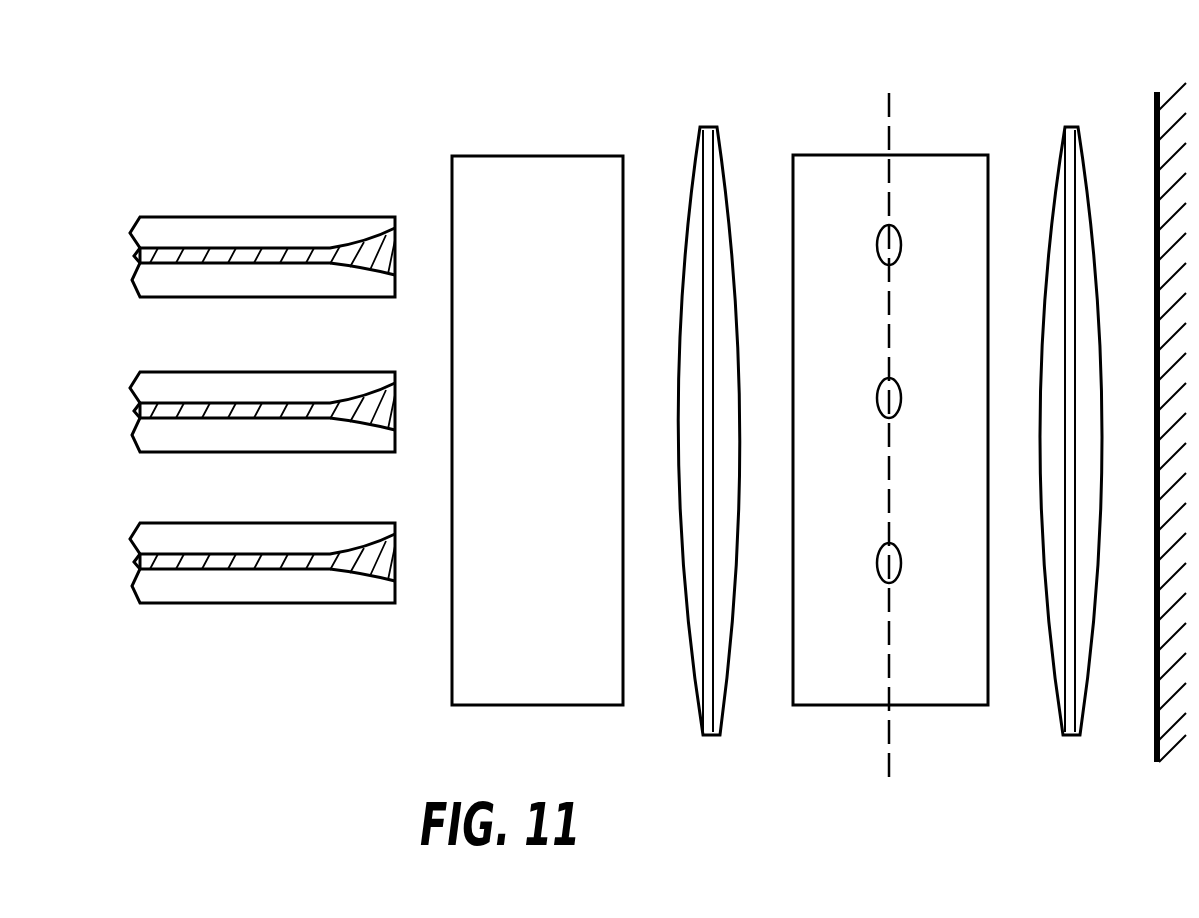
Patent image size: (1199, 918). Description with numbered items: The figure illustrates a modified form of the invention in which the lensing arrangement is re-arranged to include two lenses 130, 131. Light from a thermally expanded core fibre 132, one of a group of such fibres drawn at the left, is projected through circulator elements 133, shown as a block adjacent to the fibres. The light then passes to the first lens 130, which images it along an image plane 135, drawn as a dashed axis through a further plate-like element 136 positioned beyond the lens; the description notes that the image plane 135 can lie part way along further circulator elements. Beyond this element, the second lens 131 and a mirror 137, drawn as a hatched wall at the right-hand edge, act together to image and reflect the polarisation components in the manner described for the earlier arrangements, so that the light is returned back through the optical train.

The lens 130 is at (694, 170).
The lens 131 is at (1056, 172).
The thermally expanded core fibre 132 is at (232, 217).
The circulator elements 133 is at (510, 156).
The image plane 135 is at (890, 125).
The aperture plate 136 is at (828, 705).
The mirror 137 is at (1152, 730).